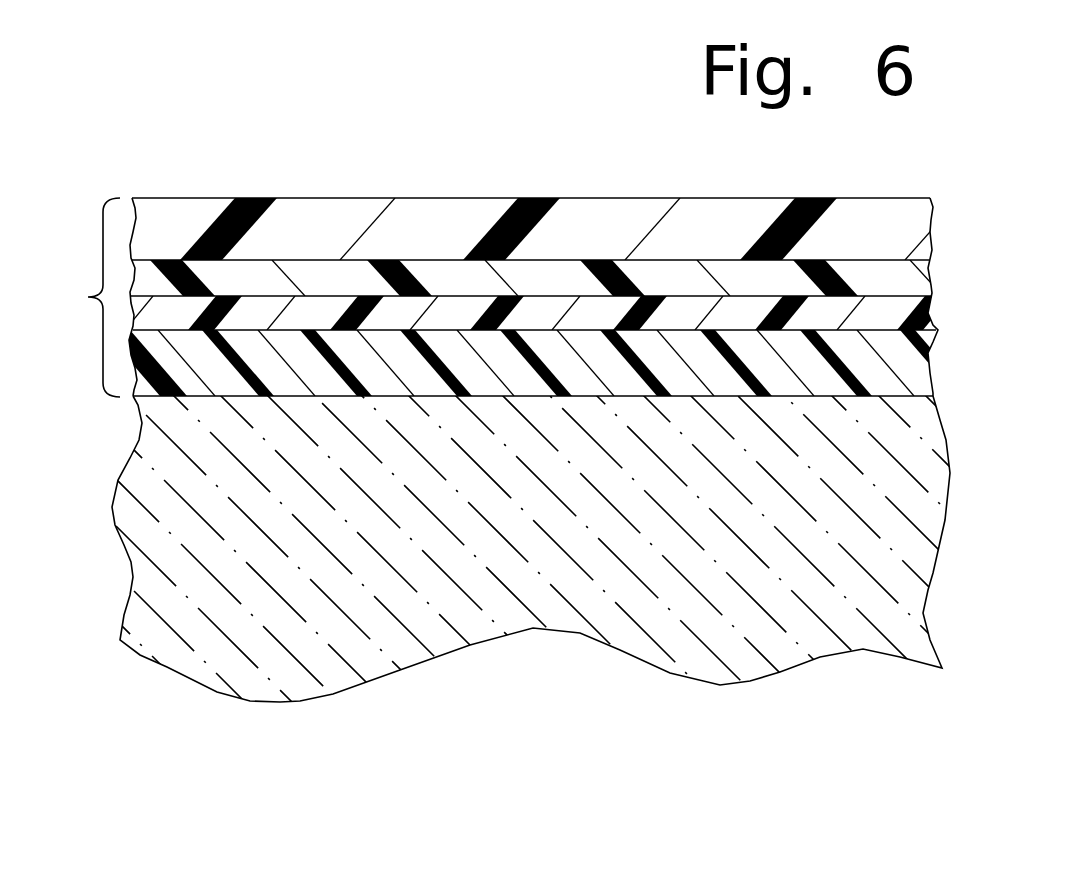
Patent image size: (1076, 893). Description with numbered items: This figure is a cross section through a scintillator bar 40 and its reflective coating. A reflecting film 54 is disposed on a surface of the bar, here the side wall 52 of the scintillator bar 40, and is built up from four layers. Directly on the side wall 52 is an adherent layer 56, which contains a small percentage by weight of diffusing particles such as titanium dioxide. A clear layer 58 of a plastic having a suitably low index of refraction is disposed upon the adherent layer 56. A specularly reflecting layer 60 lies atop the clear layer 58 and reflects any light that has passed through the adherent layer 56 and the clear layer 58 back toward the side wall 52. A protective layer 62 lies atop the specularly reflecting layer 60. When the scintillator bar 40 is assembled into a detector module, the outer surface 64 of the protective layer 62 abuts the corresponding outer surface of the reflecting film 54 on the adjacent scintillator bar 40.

The scintillator bar 40 is at (890, 518).
The side wall 52 is at (257, 394).
The reflecting film 54 is at (559, 260).
The adherent layer 56 is at (537, 363).
The clear layer 58 is at (538, 313).
The specularly reflecting layer 60 is at (537, 278).
The protective layer 62 is at (545, 229).
The outer surface 64 is at (328, 198).